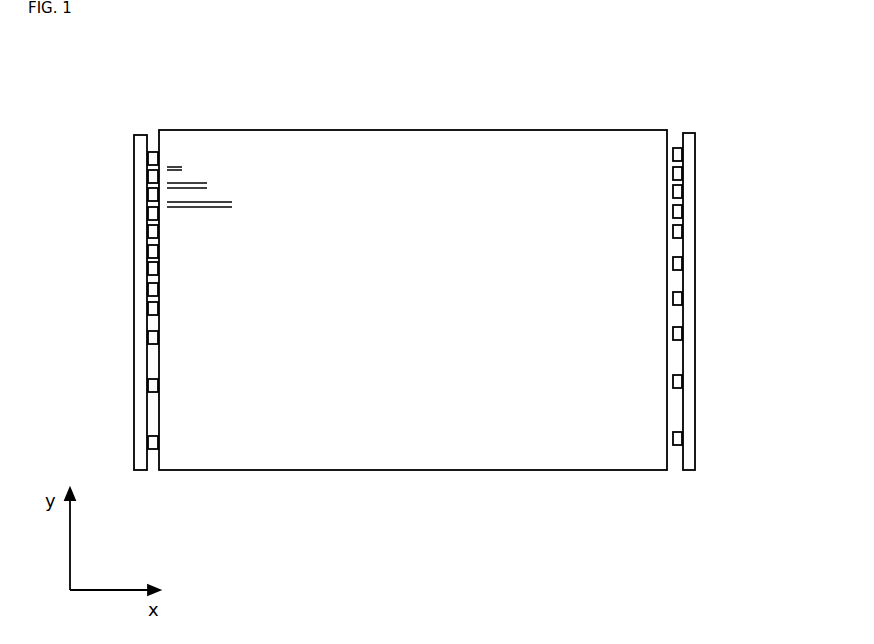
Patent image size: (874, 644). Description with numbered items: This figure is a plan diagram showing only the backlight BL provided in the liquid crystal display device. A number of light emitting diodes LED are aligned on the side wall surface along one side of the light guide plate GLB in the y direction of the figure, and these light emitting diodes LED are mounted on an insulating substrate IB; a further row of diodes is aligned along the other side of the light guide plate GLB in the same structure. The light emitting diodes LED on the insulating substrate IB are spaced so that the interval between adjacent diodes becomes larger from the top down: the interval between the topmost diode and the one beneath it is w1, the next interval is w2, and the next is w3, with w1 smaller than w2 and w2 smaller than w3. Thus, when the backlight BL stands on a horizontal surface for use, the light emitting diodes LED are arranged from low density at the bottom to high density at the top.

The backlight BL is at (391, 103).
The light guide plate GLB is at (415, 393).
The insulating substrate IB is at (141, 202).
The light emitting diode LED is at (150, 441).
The interval w1 is at (173, 190).
The interval w2 is at (198, 215).
The interval w3 is at (222, 235).